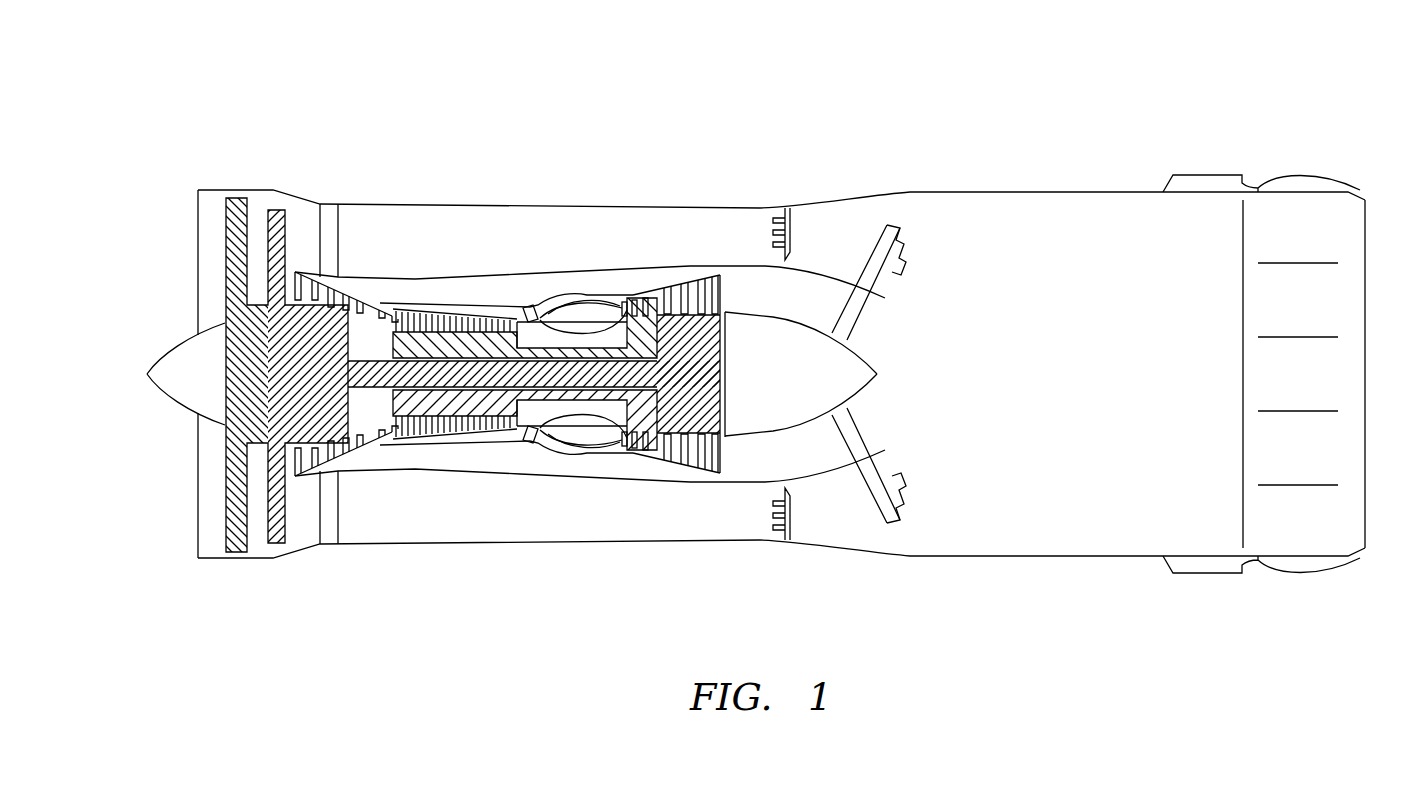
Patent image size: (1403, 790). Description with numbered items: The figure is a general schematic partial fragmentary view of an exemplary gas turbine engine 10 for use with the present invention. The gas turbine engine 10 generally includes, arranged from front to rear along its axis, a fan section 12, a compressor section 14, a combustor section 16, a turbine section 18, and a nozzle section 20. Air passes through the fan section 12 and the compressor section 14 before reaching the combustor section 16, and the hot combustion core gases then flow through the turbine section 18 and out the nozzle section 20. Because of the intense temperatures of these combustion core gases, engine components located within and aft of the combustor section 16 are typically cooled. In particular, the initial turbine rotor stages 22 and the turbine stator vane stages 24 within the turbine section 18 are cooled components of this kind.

The gas turbine engine 10 is at (756, 330).
The fan section 12 is at (257, 518).
The compressor section 14 is at (425, 455).
The combustor section 16 is at (577, 455).
The turbine section 18 is at (663, 475).
The nozzle section 20 is at (1150, 517).
The initial turbine rotor stages 22 is at (646, 288).
The turbine stator vane stages 24 is at (608, 300).